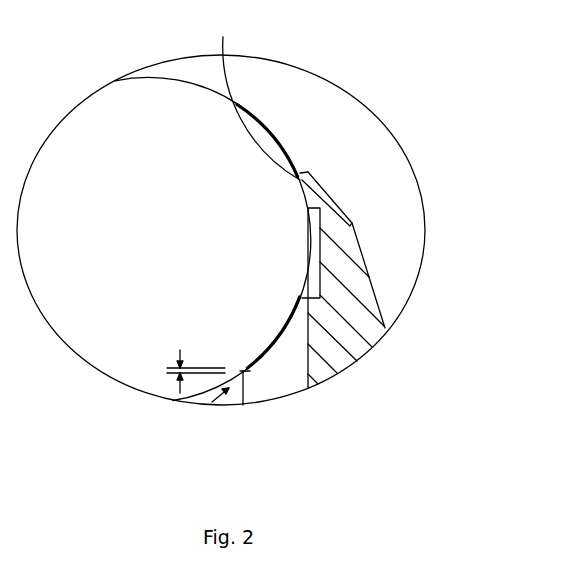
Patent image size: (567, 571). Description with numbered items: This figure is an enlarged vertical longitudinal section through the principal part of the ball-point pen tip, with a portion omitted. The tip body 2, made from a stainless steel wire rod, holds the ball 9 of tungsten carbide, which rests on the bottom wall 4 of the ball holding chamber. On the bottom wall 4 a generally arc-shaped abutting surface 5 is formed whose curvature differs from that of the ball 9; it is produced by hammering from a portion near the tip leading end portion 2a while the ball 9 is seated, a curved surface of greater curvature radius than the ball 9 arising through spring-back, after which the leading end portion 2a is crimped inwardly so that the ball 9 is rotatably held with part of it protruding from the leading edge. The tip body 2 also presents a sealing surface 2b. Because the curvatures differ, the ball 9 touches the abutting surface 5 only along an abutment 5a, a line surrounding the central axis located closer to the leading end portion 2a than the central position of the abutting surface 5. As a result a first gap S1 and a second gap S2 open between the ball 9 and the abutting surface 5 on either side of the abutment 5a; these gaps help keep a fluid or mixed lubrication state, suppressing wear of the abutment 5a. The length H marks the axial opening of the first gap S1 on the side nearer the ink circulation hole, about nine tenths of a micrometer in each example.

The ball 9 is at (150, 170).
The tip body 2 is at (355, 295).
The leading end portion 2a is at (339, 200).
The sealing surface 2b is at (259, 96).
The bottom wall 4 is at (340, 348).
The abutting surface 5 is at (250, 373).
The abutment 5a is at (290, 313).
The first gap S1 is at (243, 373).
The second gap S2 is at (305, 288).
The length of opening of first gap H is at (196, 365).